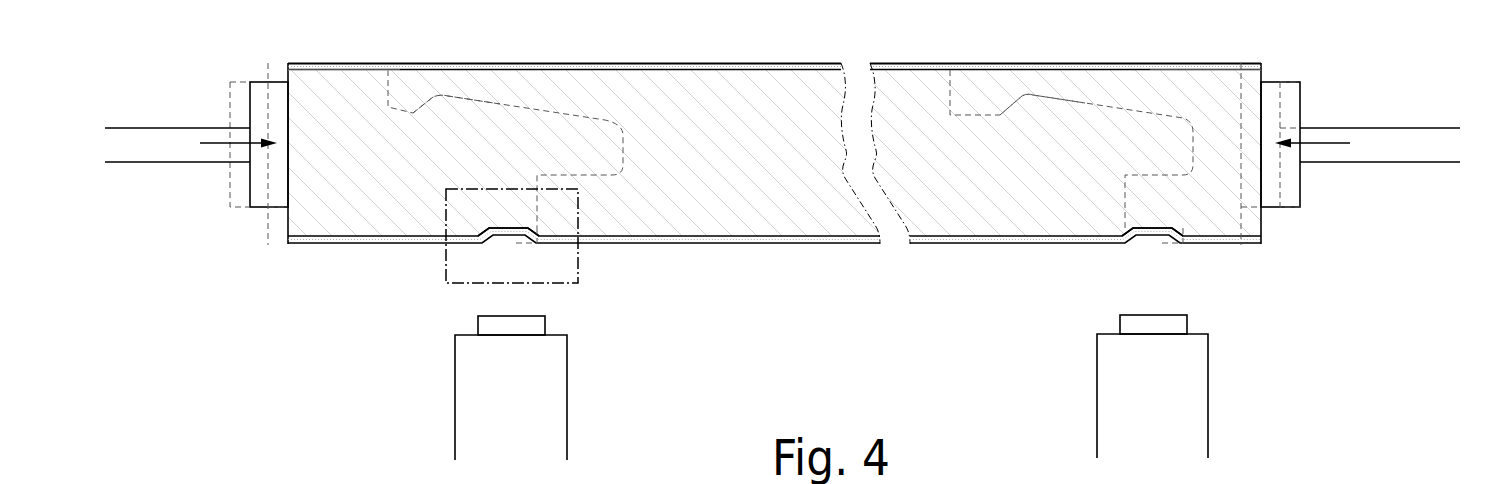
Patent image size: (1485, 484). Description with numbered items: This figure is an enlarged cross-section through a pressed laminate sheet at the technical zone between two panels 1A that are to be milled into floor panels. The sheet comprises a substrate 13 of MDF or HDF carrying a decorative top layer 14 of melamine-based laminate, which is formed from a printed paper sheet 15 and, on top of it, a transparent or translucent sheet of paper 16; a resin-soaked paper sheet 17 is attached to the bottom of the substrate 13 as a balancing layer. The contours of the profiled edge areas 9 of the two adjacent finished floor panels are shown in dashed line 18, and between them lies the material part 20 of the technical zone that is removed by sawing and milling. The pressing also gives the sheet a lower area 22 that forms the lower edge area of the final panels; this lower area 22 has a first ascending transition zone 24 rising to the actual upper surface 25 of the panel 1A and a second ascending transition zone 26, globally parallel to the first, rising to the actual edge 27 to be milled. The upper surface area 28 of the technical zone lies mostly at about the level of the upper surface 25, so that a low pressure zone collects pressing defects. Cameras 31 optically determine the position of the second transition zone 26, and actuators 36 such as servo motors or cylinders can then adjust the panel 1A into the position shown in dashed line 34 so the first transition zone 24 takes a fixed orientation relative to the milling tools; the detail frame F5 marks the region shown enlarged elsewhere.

The panel 1A is at (362, 286).
The profiled edge area 9 is at (512, 113).
The substrate 13 is at (735, 138).
The decorative top layer 14 is at (1278, 240).
The printed paper sheet 15 is at (756, 237).
The transparent or translucent sheet of paper 16 is at (808, 243).
The paper sheet 17 is at (650, 68).
The dashed line 18 is at (480, 107).
The material part 20 is at (393, 148).
The lower area 22 is at (1113, 292).
The first ascending transition zone 24 is at (1125, 242).
The upper surface 25 is at (988, 246).
The second ascending transition zone 26 is at (490, 243).
The edge 27 is at (288, 218).
The upper surface area 28 is at (313, 245).
The camera 31 is at (527, 409).
The dashed line 34 is at (270, 246).
The actuator 36 is at (182, 140).
The detail frame F5 is at (572, 284).